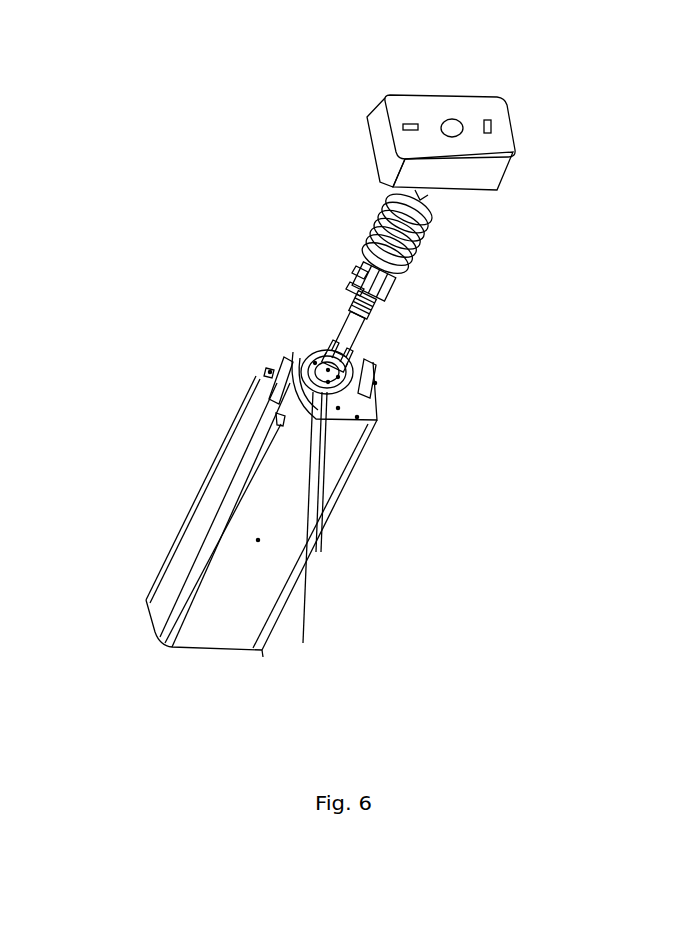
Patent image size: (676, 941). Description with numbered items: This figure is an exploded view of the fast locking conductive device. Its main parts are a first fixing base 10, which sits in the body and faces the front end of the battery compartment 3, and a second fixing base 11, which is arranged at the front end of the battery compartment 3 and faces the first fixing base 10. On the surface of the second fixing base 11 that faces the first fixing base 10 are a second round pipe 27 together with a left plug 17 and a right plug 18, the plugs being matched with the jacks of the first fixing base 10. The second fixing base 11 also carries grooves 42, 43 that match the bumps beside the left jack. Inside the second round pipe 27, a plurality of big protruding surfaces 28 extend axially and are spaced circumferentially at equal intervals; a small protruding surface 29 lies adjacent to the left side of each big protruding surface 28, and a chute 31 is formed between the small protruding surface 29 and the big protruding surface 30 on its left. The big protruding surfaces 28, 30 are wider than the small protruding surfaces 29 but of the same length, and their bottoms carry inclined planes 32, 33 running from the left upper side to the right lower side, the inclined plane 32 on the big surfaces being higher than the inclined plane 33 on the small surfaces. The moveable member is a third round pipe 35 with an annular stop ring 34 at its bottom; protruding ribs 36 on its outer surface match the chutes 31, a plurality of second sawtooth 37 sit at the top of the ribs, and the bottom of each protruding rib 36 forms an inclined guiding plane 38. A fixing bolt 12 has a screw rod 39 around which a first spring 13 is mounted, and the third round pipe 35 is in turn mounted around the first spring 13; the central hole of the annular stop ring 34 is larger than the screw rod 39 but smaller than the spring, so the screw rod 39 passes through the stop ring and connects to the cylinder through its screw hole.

The first fixing base 10 is at (453, 128).
The annular stop ring 34 is at (370, 240).
The third round pipe 35 is at (362, 288).
The protruding ribs 36 is at (389, 289).
The second sawtooth 37 is at (385, 284).
The inclined guiding plane 38 is at (350, 287).
The screw rod 39 is at (350, 324).
The first spring 13 is at (372, 310).
The fixing bolt 12 is at (347, 350).
The small protruding surface 29 is at (325, 365).
The big protruding surface 30 is at (315, 363).
The second fixing base 11 is at (377, 420).
The left plug 17 is at (375, 383).
The right plug 18 is at (280, 383).
The big protruding surfaces 28 is at (357, 417).
The second round pipe 27 is at (338, 408).
The groove 42 is at (270, 372).
The battery compartment 3 is at (258, 540).
The chute 31 is at (279, 420).
The inclined plane 32 is at (360, 566).
The inclined plane 33 is at (344, 644).
The groove 43 is at (263, 652).